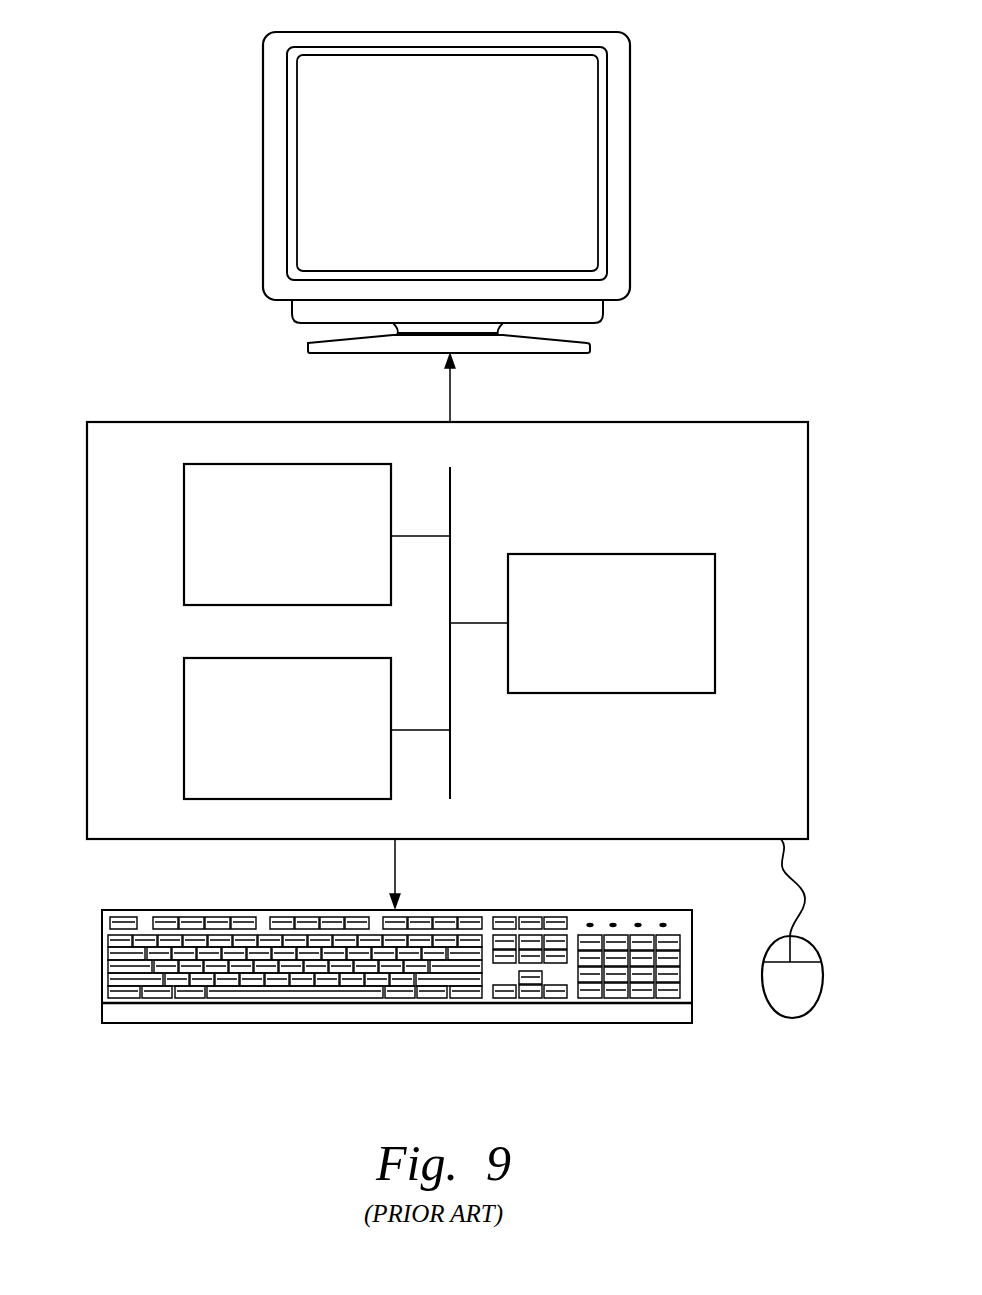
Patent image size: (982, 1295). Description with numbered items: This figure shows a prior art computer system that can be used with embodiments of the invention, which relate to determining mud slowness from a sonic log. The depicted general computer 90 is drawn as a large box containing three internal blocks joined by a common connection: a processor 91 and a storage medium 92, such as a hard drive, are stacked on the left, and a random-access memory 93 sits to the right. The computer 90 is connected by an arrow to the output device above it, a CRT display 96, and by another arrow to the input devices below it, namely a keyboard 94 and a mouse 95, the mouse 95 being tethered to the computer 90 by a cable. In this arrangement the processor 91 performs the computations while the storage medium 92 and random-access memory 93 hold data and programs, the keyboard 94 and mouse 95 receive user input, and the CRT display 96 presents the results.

The general computer 90 is at (447, 613).
The processor 91 is at (184, 530).
The storage medium 92 is at (184, 731).
The random-access memory 93 is at (715, 623).
The keyboard 94 is at (102, 957).
The mouse 95 is at (824, 973).
The CRT display 96 is at (631, 151).